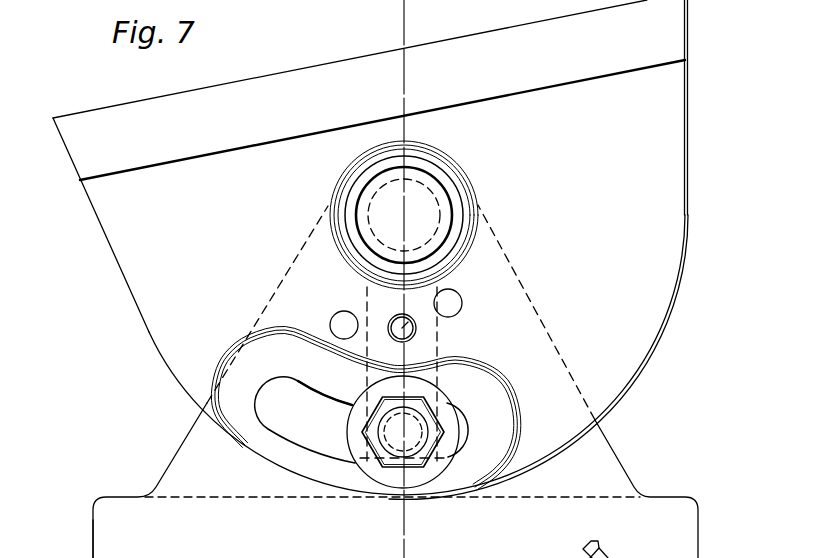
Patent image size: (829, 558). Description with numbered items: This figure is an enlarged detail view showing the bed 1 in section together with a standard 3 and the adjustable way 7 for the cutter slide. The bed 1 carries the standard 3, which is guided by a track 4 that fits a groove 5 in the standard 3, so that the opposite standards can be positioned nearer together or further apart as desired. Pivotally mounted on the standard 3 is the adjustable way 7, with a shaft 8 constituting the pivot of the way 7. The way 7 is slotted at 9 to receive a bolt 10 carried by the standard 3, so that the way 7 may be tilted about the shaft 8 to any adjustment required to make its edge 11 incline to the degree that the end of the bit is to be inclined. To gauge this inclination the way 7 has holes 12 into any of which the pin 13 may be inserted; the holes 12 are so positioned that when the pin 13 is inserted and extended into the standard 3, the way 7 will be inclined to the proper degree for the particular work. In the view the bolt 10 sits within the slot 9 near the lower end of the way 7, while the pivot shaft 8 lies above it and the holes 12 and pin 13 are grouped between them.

The bed 1 is at (62, 540).
The standard 3 is at (296, 551).
The track 4 is at (632, 557).
The groove 5 is at (566, 556).
The adjustable way 7 is at (572, 314).
The shaft 8 is at (381, 199).
The slot 9 is at (273, 392).
The bolt 10 is at (383, 468).
The edge 11 is at (300, 70).
The holes 12 is at (340, 311).
The pin 13 is at (393, 340).